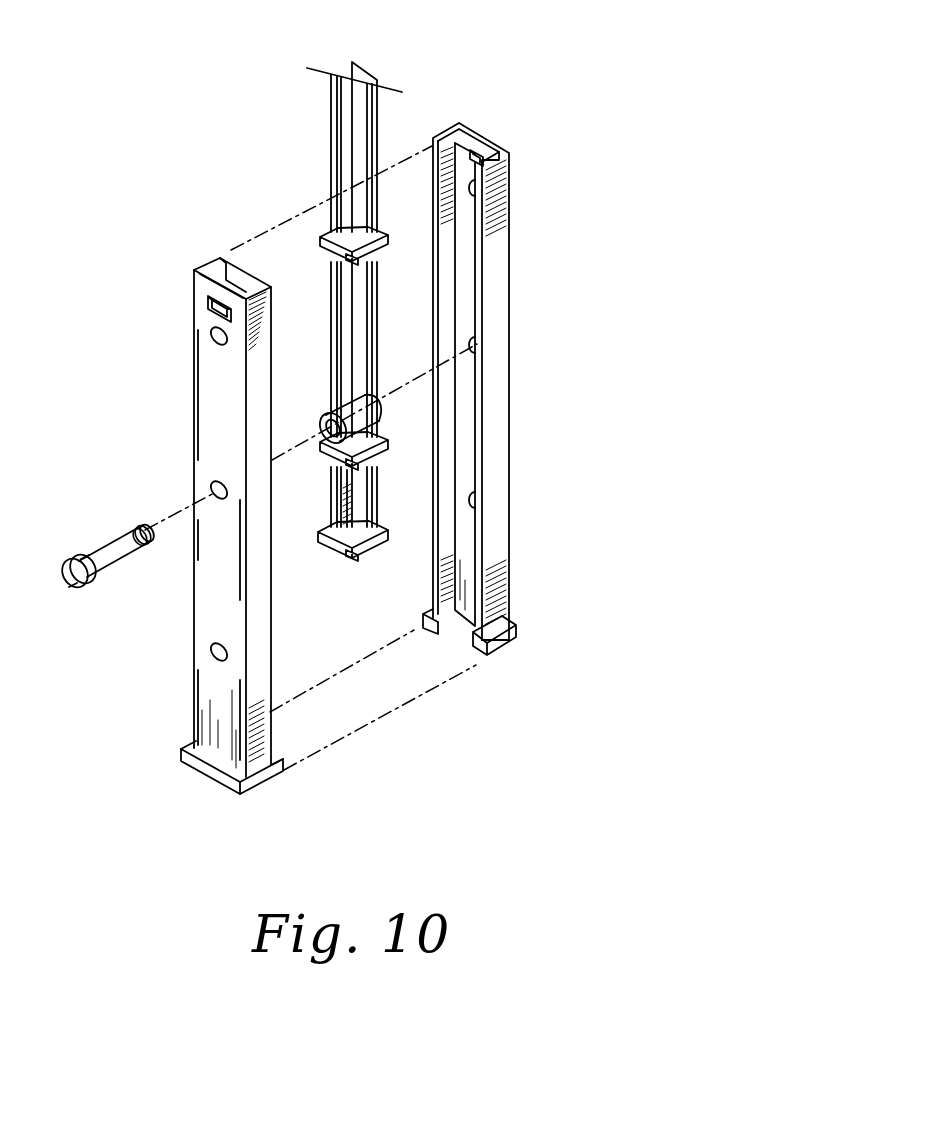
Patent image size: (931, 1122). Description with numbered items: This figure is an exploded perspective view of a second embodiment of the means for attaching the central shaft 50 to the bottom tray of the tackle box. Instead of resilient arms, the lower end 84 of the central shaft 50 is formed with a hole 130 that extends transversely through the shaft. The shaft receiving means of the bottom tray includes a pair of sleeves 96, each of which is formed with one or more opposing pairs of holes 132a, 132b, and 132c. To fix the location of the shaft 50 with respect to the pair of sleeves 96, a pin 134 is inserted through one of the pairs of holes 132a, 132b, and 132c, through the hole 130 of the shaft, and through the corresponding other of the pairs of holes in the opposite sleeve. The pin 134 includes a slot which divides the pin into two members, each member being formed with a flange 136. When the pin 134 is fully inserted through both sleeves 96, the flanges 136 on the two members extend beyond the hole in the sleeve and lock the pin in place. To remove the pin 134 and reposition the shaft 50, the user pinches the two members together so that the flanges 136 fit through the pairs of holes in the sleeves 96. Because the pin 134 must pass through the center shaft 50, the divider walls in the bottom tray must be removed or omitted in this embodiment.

The central shaft 50 is at (331, 145).
The lower end of the shaft 84 is at (413, 110).
The sleeves 96 is at (218, 400).
The hole 130 is at (324, 429).
The holes 132a is at (212, 340).
The holes 132b is at (211, 488).
The holes 132c is at (212, 652).
The pin 134 is at (108, 548).
The flange 136 is at (142, 527).